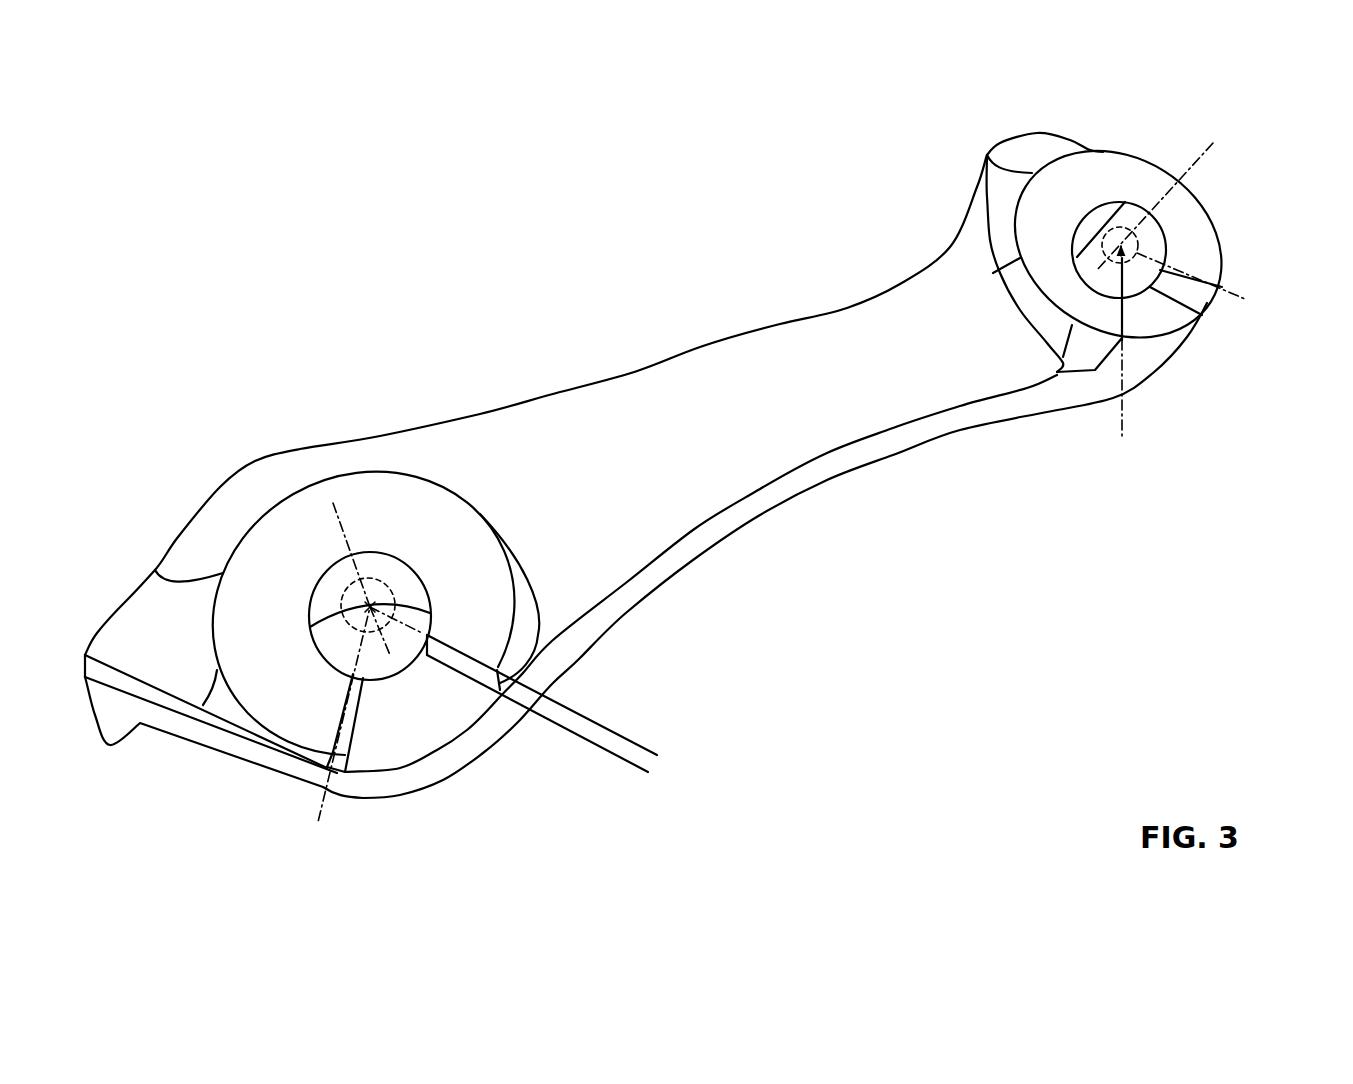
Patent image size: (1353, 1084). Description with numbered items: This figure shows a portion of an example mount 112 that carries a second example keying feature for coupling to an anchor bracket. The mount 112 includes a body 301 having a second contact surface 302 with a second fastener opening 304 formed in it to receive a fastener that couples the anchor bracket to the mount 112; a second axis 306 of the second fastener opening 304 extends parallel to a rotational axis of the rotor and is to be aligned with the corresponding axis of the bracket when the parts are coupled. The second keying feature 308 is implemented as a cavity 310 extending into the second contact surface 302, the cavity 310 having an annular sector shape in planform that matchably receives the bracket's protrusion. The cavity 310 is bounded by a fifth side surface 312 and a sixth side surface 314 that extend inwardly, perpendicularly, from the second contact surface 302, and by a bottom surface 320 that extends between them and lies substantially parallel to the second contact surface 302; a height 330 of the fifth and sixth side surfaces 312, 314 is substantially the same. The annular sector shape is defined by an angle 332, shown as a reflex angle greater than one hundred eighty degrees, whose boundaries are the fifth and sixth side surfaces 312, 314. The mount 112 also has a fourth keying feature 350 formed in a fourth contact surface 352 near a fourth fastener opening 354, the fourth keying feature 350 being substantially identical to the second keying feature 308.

The mount 112 is at (703, 345).
The body 301 is at (638, 392).
The second contact surface 302 is at (413, 500).
The second fastener opening 304 is at (346, 644).
The second axis 306 is at (333, 502).
The second keying feature 308 is at (414, 756).
The cavity 310 is at (446, 734).
The fifth side surface 312 is at (347, 720).
The sixth side surface 314 is at (485, 682).
The bottom surface 320 is at (365, 760).
The height 330 is at (610, 793).
The angle 332 is at (355, 588).
The fourth keying feature 350 is at (1232, 366).
The fourth contact surface 352 is at (1203, 260).
The fourth fastener opening 354 is at (1131, 221).